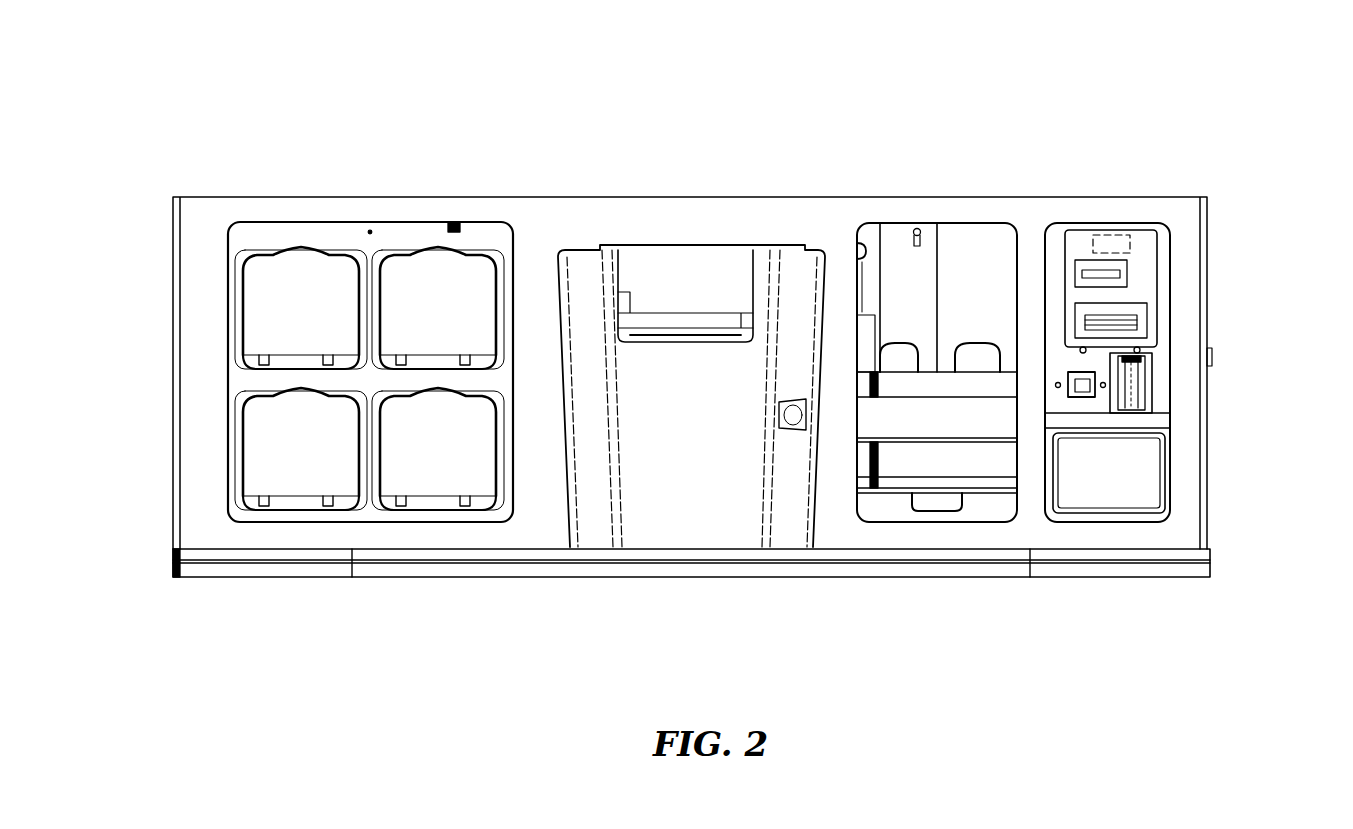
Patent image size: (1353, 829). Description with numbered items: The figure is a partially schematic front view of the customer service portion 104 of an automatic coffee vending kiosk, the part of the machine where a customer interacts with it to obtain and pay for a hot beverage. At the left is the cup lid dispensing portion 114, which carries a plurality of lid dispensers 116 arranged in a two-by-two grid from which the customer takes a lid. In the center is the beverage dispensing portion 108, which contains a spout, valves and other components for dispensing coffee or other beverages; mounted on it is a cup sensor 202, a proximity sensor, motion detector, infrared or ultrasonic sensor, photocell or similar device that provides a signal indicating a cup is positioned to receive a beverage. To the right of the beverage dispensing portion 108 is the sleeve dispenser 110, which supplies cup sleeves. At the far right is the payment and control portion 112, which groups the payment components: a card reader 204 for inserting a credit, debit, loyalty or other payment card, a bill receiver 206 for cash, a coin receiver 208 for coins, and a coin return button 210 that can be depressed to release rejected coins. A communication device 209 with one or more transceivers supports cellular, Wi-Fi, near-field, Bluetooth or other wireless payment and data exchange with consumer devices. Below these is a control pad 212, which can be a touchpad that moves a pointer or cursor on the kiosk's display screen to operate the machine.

The customer service portion 104 is at (1028, 134).
The beverage dispensing portion 108 is at (697, 500).
The sleeve dispenser 110 is at (960, 275).
The payment and control portion 112 is at (1168, 380).
The cup lid dispensing portion 114 is at (210, 368).
The lid dispensers 116 is at (420, 423).
The cup sensor 202 is at (803, 427).
The card reader 204 is at (1127, 274).
The bill receiver 206 is at (1147, 320).
The coin receiver 208 is at (1140, 386).
The communication device 209 is at (1160, 229).
The coin return button 210 is at (1095, 392).
The control pad 212 is at (1115, 472).